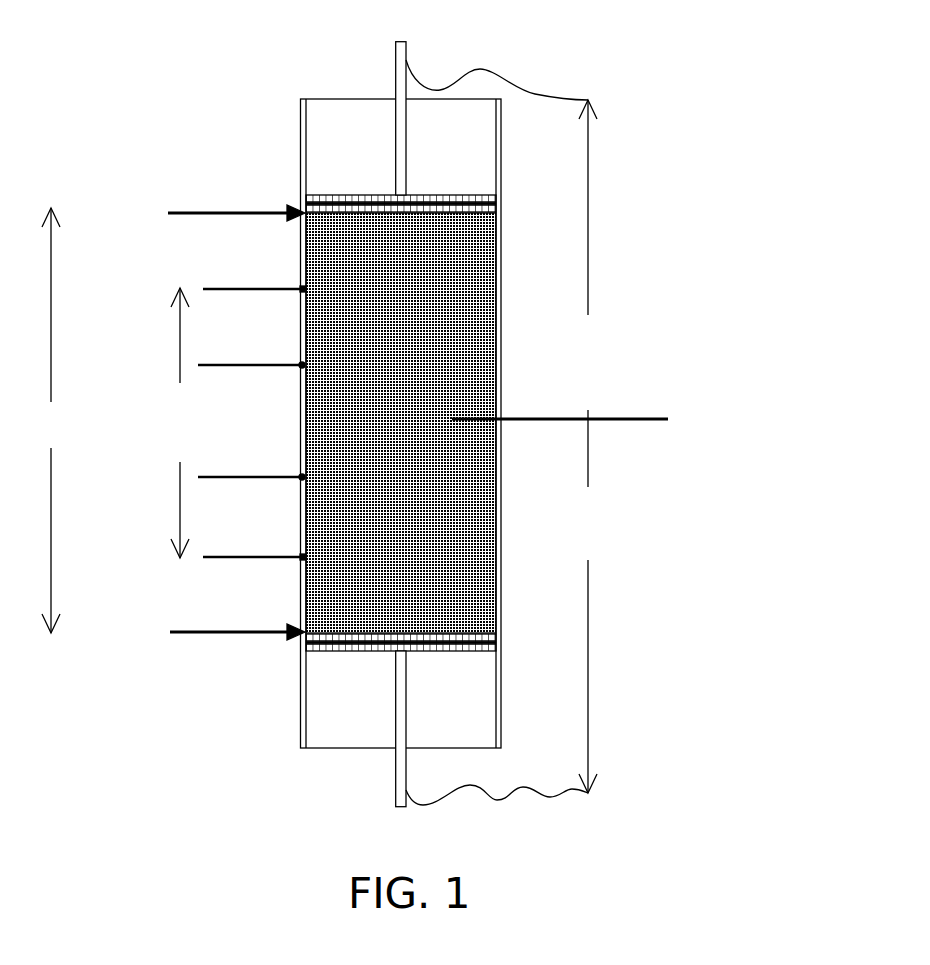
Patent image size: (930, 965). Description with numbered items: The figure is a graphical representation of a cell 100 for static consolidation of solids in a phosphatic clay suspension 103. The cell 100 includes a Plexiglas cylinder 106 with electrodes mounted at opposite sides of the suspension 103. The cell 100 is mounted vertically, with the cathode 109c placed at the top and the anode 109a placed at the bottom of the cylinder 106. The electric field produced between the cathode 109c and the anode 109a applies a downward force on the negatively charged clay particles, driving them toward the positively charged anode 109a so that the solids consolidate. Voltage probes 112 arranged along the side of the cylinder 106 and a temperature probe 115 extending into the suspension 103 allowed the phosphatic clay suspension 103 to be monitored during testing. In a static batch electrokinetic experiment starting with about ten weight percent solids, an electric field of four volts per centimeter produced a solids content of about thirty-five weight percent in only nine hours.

The cell 100 is at (255, 52).
The phosphatic clay suspension 103 is at (485, 278).
The Plexiglas cylinder 106 is at (502, 724).
The anode 109a is at (322, 653).
The cathode 109c is at (327, 195).
The voltage probes 112 is at (238, 287).
The temperature probe 115 is at (613, 422).